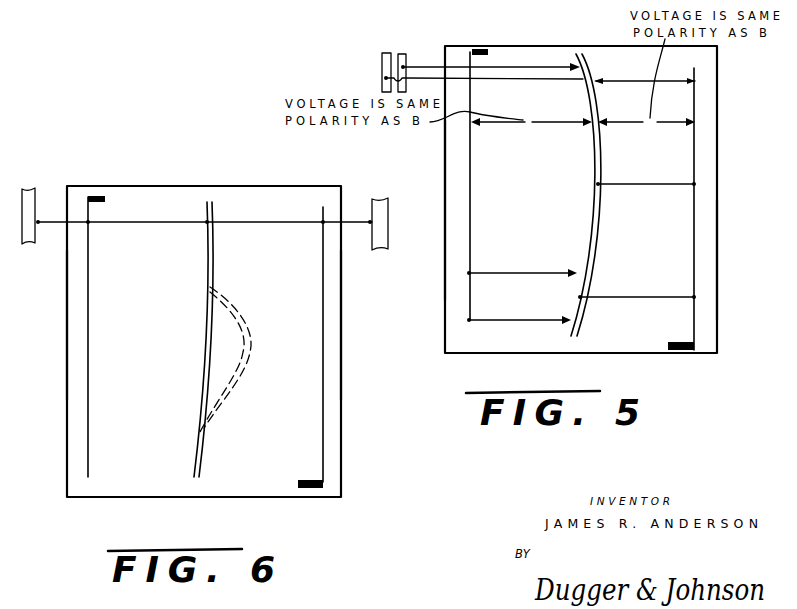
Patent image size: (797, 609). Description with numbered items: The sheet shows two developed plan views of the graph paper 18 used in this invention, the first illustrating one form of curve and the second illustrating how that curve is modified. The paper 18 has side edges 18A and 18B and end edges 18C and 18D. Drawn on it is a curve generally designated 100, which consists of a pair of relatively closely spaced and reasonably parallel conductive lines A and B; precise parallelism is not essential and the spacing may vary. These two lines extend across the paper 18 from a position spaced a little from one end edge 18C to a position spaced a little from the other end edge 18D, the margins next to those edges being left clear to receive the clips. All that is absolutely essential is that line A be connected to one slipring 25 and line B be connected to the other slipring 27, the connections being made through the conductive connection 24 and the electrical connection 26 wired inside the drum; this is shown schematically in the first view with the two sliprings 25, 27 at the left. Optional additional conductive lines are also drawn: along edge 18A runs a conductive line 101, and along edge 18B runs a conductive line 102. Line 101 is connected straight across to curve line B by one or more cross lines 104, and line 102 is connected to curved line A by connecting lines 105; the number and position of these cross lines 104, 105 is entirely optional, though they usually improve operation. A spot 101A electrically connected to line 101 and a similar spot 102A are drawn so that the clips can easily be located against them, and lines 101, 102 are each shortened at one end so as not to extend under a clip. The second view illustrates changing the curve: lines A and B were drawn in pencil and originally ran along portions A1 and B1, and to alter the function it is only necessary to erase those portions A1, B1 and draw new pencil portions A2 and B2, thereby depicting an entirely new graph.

In FIG. 5, the graph paper 18 is at (717, 128).
In FIG. 6, the graph paper 18 is at (204, 341).
In FIG. 5, the side edge 18A is at (718, 252).
In FIG. 6, the side edge 18A is at (342, 308).
In FIG. 5, the side edge 18B is at (447, 162).
In FIG. 6, the side edge 18B is at (67, 298).
In FIG. 5, the end edge 18C is at (593, 46).
In FIG. 6, the end edge 18C is at (165, 186).
In FIG. 5, the end edge 18D is at (672, 354).
In FIG. 6, the end edge 18D is at (172, 497).
In FIG. 5, the curve 100 is at (599, 162).
In FIG. 5, the conductive line 101 is at (694, 165).
In FIG. 6, the conductive line 101 is at (323, 276).
In FIG. 5, the spot 101A is at (688, 342).
In FIG. 6, the spot 101A is at (310, 480).
In FIG. 5, the conductive line 102 is at (470, 192).
In FIG. 6, the conductive line 102 is at (85, 408).
In FIG. 5, the spot 102A is at (480, 49).
In FIG. 6, the spot 102A is at (96, 196).
In FIG. 5, the cross lines 104 is at (665, 184).
In FIG. 5, the connecting lines 105 is at (497, 319).
In FIG. 5, the conductive connection 24 is at (505, 67).
In FIG. 5, the slipring 25 is at (401, 54).
In FIG. 5, the electrical connection 26 is at (483, 79).
In FIG. 5, the slipring 27 is at (386, 53).
In FIG. 5, the line A is at (593, 150).
In FIG. 6, the line A is at (207, 268).
In FIG. 5, the line B is at (600, 104).
In FIG. 6, the line B is at (214, 255).
In FIG. 6, the portion A1 is at (207, 333).
In FIG. 6, the portion A2 is at (240, 353).
In FIG. 6, the portion B1 is at (208, 380).
In FIG. 6, the portion B2 is at (230, 309).